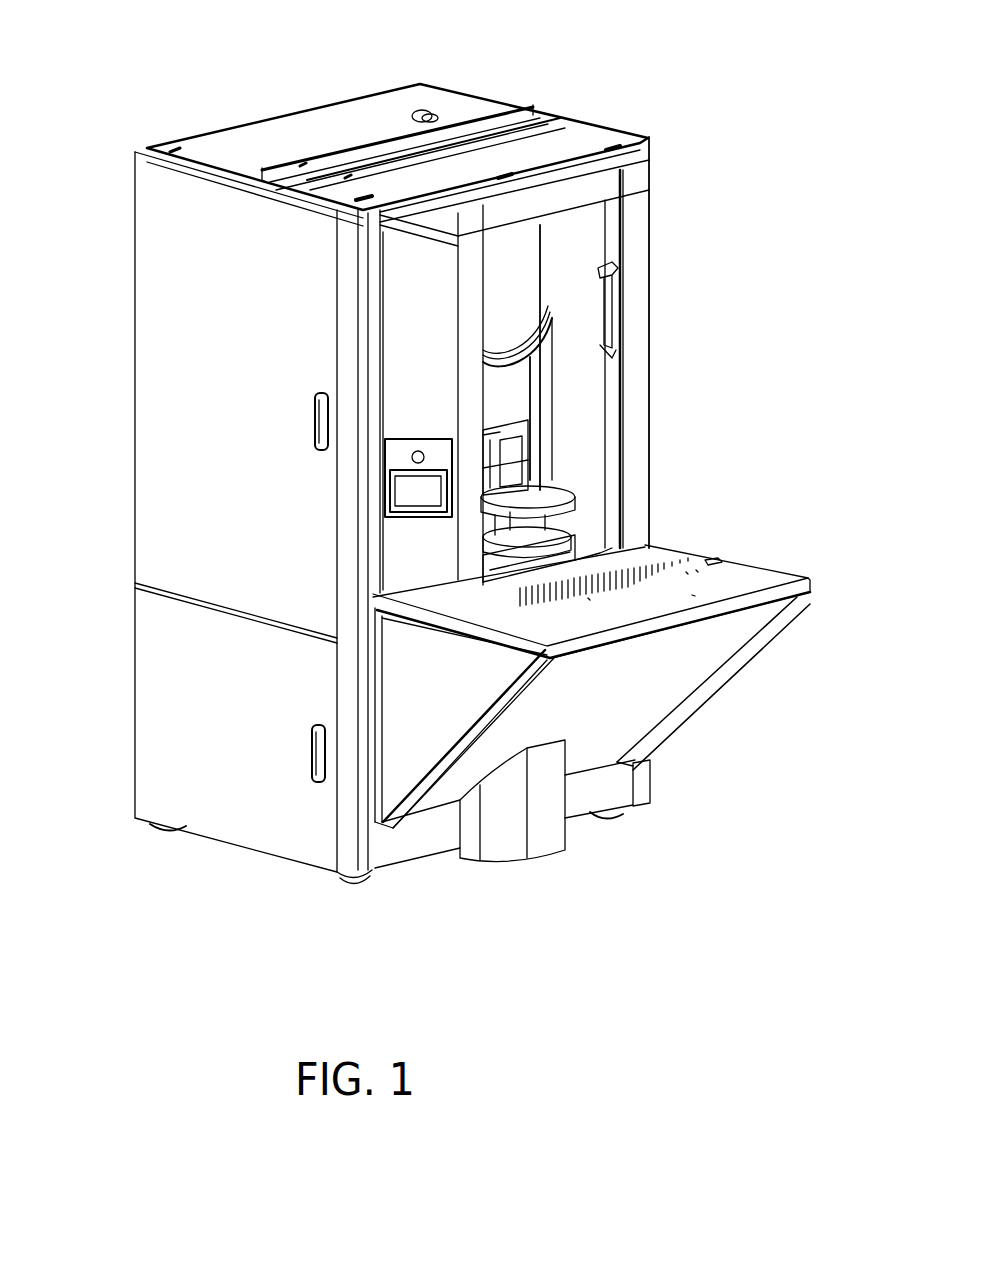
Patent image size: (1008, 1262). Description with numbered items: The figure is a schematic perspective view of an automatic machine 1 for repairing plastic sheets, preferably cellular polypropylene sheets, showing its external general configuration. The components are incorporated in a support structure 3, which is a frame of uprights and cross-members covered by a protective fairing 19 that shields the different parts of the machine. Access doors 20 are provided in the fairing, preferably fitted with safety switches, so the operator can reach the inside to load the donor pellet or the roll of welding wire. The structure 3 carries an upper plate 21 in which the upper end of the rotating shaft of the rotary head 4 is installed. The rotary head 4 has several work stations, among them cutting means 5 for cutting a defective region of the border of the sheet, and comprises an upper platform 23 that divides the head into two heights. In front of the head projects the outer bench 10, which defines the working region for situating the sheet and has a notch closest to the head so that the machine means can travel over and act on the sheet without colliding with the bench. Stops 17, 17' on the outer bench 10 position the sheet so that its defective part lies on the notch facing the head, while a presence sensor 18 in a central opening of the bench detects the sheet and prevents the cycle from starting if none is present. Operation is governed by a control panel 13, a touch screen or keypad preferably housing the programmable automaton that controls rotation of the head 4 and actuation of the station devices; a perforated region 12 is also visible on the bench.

The machine 1 is at (742, 315).
The support structure 3 is at (650, 315).
The rotary head 4 is at (552, 403).
The cutting means 5 is at (480, 468).
The outer bench 10 is at (743, 583).
The perforated drainage area 12 is at (655, 572).
The control panel 13 is at (385, 490).
The stop 17 is at (647, 520).
The stop 17' is at (786, 549).
The presence sensor 18 is at (613, 603).
The protective fairing 19 is at (405, 245).
The access doors 20 is at (178, 318).
The upper plate 21 is at (448, 108).
The upper platform 23 is at (547, 318).